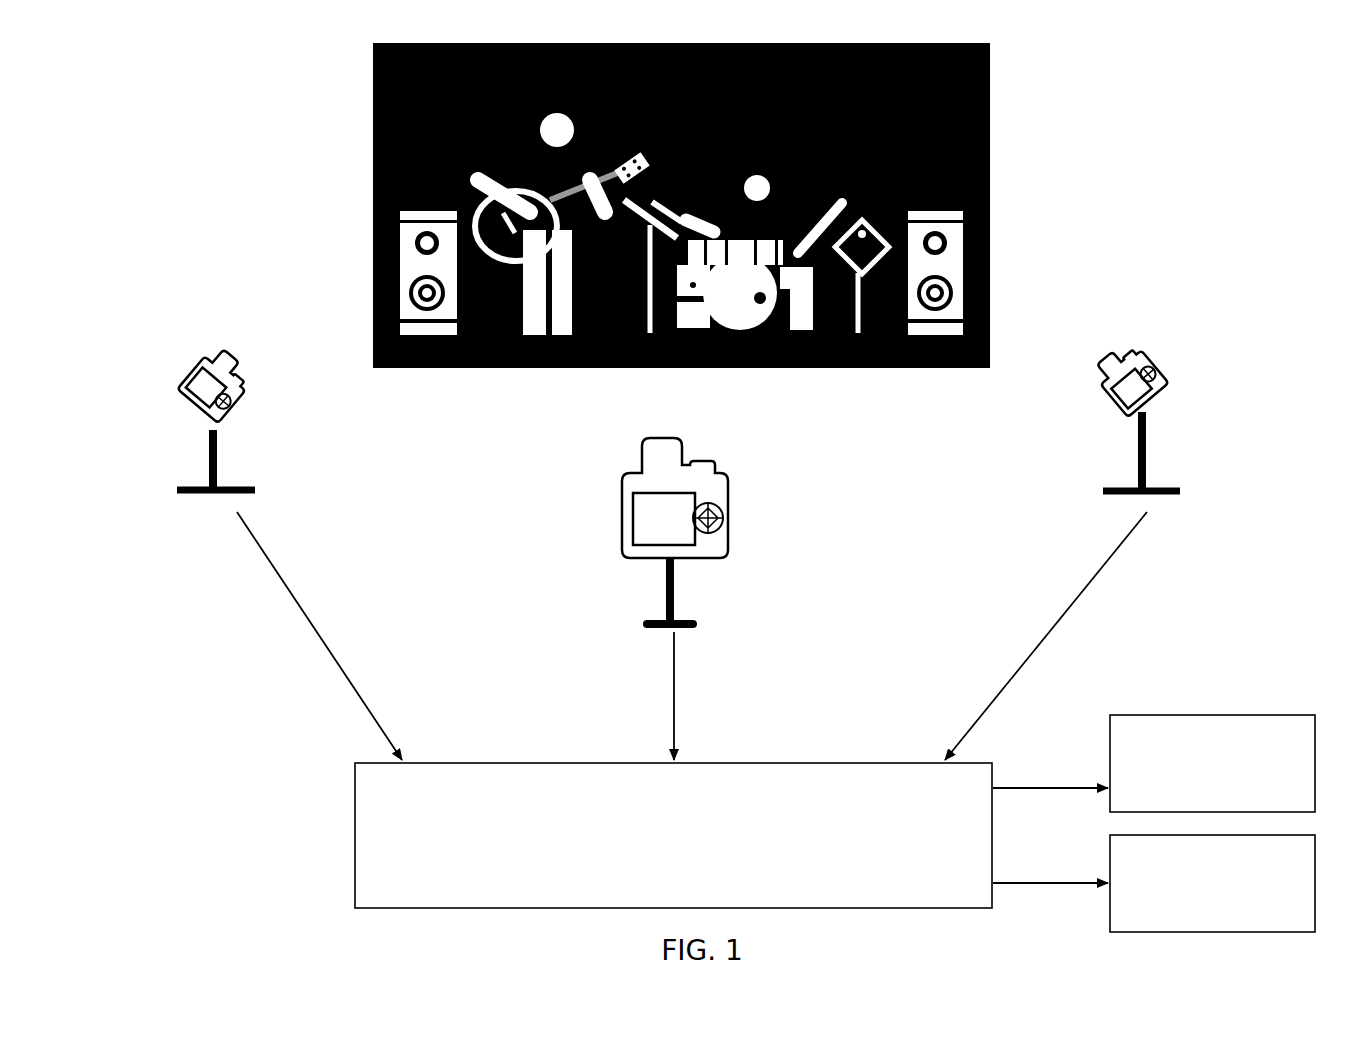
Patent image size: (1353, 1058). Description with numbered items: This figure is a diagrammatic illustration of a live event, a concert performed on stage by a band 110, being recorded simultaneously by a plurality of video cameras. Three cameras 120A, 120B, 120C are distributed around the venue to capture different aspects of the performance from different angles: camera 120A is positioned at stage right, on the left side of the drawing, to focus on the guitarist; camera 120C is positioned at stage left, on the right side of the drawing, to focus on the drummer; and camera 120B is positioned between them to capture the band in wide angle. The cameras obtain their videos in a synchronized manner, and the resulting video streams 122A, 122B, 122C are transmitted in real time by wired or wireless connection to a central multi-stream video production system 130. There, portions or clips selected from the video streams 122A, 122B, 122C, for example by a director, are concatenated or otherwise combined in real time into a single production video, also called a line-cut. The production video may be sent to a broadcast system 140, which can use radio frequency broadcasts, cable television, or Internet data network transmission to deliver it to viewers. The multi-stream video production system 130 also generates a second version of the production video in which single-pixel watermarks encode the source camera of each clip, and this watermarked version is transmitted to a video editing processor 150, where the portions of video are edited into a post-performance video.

The band 110 is at (373, 182).
The camera 120A is at (215, 345).
The camera 120B is at (621, 521).
The camera 120C is at (1168, 368).
The video stream 122A is at (295, 600).
The video stream 122B is at (672, 705).
The video stream 122C is at (1025, 655).
The multi-stream video production system 130 is at (655, 861).
The broadcast system 140 is at (1285, 794).
The video editing processor 150 is at (1271, 912).